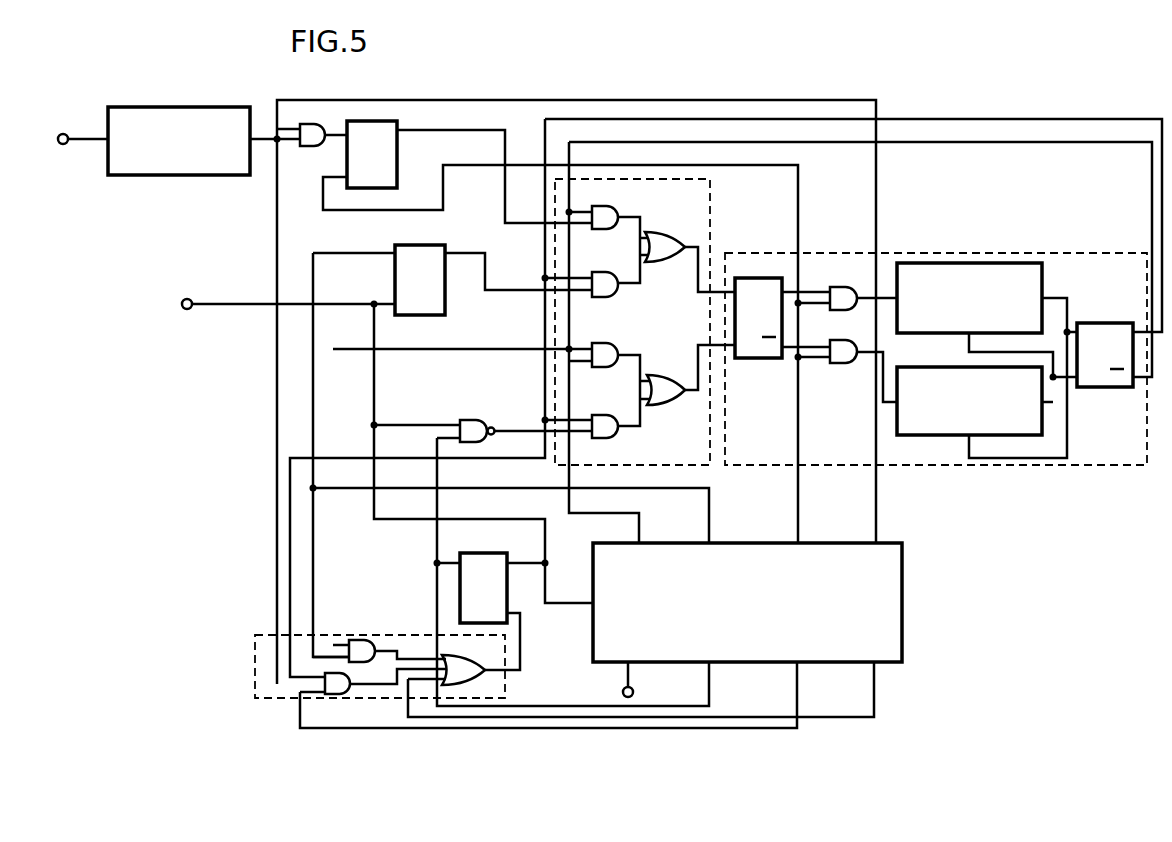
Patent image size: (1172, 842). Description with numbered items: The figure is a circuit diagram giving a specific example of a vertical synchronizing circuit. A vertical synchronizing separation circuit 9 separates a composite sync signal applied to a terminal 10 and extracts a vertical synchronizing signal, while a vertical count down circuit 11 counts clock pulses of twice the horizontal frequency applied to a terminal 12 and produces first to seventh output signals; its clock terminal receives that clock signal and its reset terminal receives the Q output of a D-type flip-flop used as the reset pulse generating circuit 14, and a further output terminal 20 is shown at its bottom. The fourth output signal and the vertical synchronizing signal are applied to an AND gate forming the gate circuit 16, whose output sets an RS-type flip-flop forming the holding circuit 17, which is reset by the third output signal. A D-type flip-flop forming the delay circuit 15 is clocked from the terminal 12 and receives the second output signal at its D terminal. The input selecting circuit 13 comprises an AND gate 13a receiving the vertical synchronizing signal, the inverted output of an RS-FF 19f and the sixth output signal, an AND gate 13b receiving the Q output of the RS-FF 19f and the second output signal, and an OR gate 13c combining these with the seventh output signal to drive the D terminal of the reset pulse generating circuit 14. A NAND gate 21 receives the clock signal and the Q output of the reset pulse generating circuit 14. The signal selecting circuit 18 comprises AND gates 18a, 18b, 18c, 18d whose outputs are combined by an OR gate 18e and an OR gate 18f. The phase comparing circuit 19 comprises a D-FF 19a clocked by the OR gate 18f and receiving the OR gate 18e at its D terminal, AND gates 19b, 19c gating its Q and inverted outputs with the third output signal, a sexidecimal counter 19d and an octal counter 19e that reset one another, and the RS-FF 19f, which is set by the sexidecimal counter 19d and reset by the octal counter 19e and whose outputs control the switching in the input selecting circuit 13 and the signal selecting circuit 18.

The vertical synchronizing separation circuit 9 is at (183, 107).
The terminal 10 is at (63, 132).
The vertical count down circuit 11 is at (902, 585).
The terminal 12 is at (185, 299).
The input selecting circuit 13 is at (250, 634).
The AND gate 13a is at (342, 673).
The AND gate 13b is at (380, 650).
The OR gate 13c is at (468, 660).
The reset pulse generating circuit 14 is at (507, 598).
The delay circuit 15 is at (440, 300).
The gate circuit 16 is at (312, 146).
The holding circuit 17 is at (397, 150).
The signal selecting circuit 18 is at (710, 210).
The AND gate 18a is at (612, 207).
The AND gate 18b is at (604, 297).
The AND gate 18c is at (602, 367).
The AND gate 18d is at (618, 436).
The OR gate 18e is at (665, 262).
The OR gate 18f is at (672, 405).
The phase comparing circuit 19 is at (995, 253).
The D-FF 19a is at (752, 358).
The AND gate 19b is at (838, 287).
The AND gate 19c is at (840, 363).
The sexidecimal counter 19d is at (947, 333).
The octal counter 19e is at (930, 435).
The RS-FF 19f is at (1100, 323).
The output terminal 20 is at (634, 692).
The NAND gate 21 is at (475, 420).